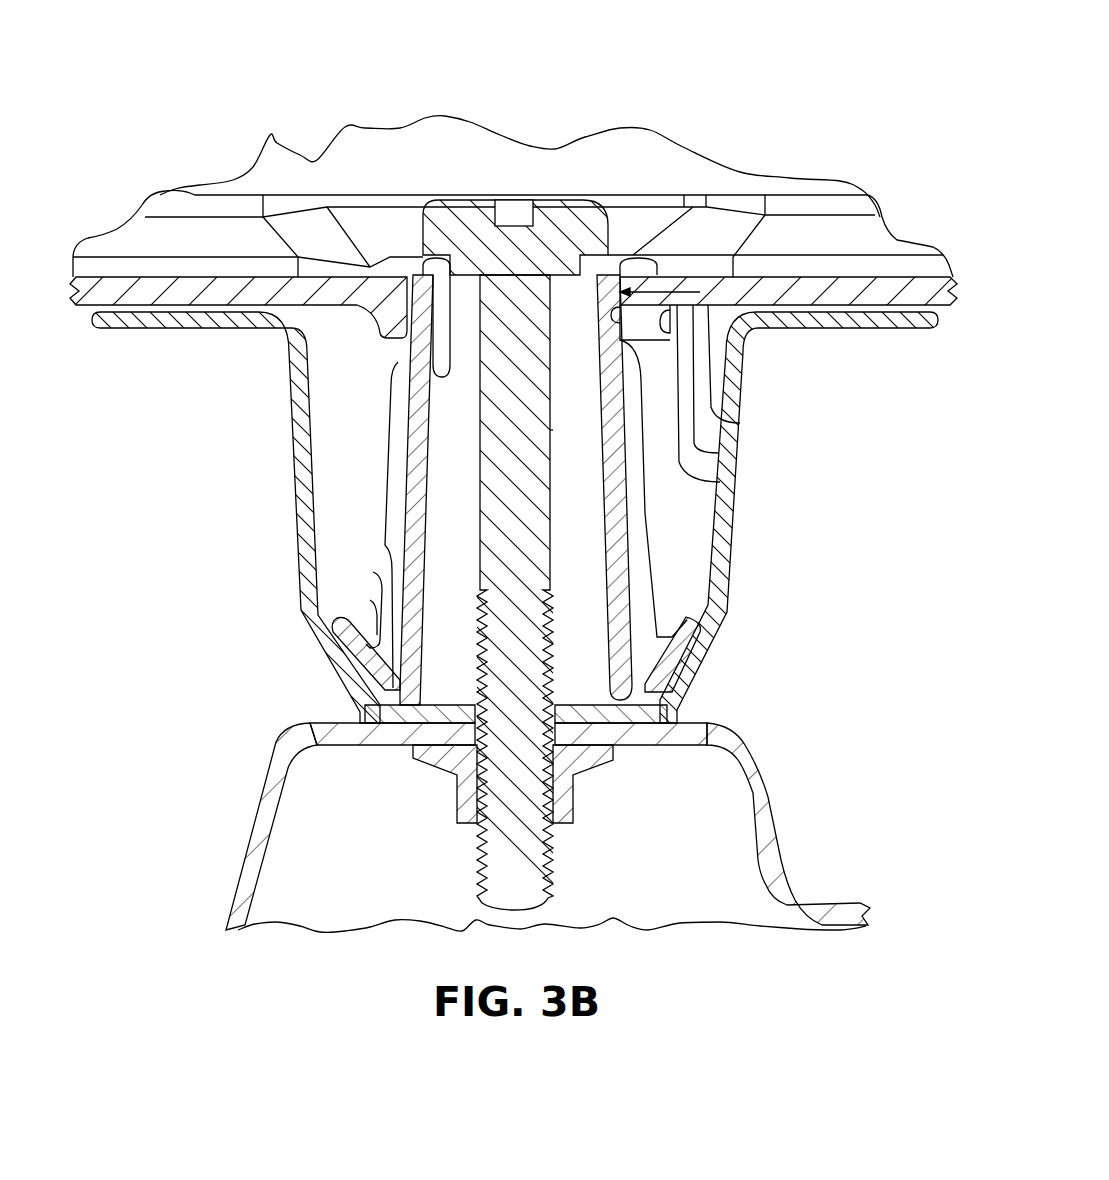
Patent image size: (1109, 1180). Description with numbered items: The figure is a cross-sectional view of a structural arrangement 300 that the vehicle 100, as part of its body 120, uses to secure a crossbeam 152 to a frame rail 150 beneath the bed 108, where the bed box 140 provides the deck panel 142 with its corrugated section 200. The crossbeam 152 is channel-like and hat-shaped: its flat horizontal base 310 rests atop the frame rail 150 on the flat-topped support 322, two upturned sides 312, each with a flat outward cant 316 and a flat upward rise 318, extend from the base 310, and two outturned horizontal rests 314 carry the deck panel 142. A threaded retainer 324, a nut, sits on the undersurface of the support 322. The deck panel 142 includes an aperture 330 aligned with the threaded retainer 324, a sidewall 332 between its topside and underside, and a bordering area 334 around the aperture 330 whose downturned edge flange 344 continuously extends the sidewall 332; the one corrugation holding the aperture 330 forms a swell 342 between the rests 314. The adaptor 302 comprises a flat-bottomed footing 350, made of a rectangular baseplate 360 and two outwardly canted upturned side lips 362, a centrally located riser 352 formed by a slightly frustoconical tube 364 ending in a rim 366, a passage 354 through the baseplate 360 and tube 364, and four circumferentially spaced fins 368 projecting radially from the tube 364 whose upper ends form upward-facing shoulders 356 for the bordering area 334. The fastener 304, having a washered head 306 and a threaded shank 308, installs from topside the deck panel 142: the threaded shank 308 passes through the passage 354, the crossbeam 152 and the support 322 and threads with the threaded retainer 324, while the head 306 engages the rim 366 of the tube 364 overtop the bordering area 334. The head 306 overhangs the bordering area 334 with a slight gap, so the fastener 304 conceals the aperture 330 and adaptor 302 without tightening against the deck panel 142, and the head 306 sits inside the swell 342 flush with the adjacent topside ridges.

The vehicle 100 is at (120, 218).
The bed 108 is at (187, 185).
The body 120 is at (275, 185).
The bed box 140 is at (355, 195).
The deck panel 142 is at (684, 195).
The frame rail 150 is at (350, 722).
The crossbeam 152 is at (293, 472).
The corrugated section 200 is at (706, 195).
The structural arrangement 300 is at (522, 475).
The adaptor 302 is at (386, 434).
The fastener 304 is at (550, 317).
The head 306 is at (556, 200).
The threaded shank 308 is at (550, 430).
The base 310 is at (342, 708).
The side 312 is at (297, 502).
The rest 314 is at (203, 329).
The outward cant 316 is at (333, 673).
The upward rise 318 is at (299, 528).
The support 322 is at (268, 775).
The threaded retainer 324 is at (290, 748).
The aperture 330 is at (740, 424).
The sidewall 332 is at (718, 452).
The bordering area 334 is at (637, 247).
The swell 342 is at (641, 227).
The edge flange 344 is at (720, 481).
The footing 350 is at (393, 688).
The riser 352 is at (408, 463).
The passage 354 is at (447, 408).
The shoulder 356 is at (405, 375).
The baseplate 360 is at (373, 572).
The side lip 362 is at (370, 600).
The tube 364 is at (407, 492).
The rim 366 is at (432, 377).
The fin 368 is at (381, 518).